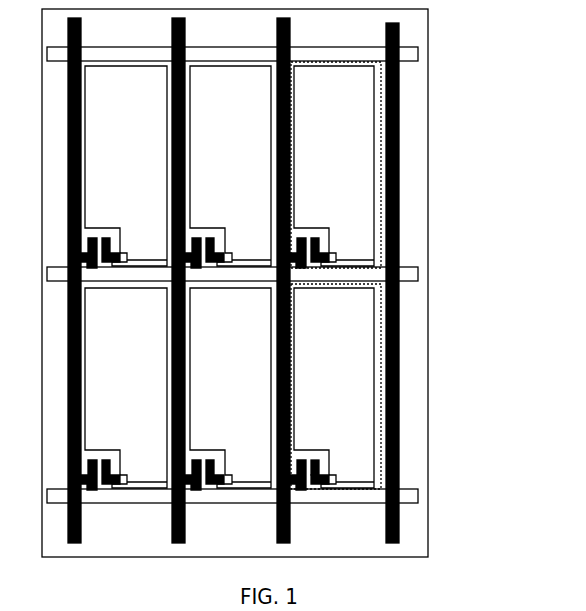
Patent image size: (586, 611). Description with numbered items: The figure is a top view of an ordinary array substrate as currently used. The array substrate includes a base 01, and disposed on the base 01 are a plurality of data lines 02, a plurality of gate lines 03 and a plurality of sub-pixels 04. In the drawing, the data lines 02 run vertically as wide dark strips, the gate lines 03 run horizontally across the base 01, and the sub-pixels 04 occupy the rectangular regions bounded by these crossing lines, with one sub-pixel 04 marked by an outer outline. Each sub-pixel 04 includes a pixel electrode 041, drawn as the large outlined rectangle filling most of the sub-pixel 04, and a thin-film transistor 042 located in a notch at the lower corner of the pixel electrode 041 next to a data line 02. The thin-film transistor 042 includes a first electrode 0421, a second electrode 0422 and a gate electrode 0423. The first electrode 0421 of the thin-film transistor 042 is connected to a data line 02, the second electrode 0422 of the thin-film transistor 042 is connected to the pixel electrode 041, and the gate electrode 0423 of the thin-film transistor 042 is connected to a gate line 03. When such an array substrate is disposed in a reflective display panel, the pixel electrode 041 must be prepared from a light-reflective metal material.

The base 01 is at (428, 19).
The data line 02 is at (405, 113).
The gate line 03 is at (418, 55).
The sub-pixel 04 is at (382, 165).
The pixel electrode 041 is at (372, 207).
The thin-film transistor 042 is at (315, 230).
The first electrode 0421 is at (297, 490).
The second electrode 0422 is at (313, 486).
The gate electrode 0423 is at (313, 458).